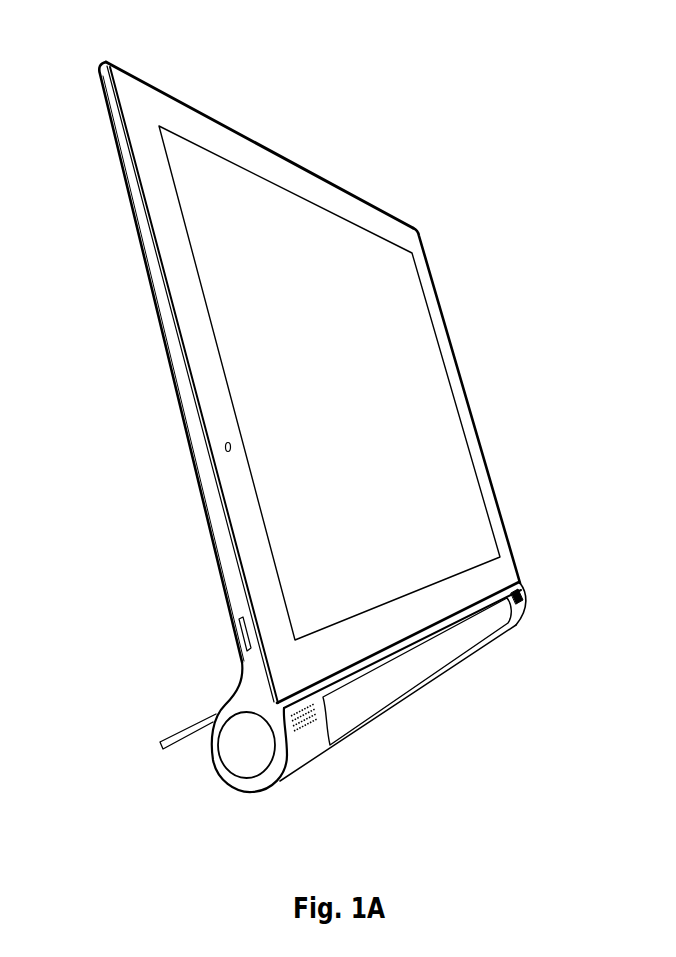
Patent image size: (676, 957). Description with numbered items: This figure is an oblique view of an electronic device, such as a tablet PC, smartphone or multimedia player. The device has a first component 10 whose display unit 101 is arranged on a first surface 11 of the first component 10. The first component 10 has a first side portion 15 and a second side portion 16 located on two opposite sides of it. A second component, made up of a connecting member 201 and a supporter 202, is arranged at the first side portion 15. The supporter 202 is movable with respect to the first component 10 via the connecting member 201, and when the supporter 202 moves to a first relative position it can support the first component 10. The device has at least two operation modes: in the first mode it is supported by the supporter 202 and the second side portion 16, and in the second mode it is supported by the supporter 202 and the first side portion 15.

The first component 10 is at (433, 300).
The first surface 11 is at (138, 95).
The second side portion 16 is at (283, 172).
The display unit 101 is at (435, 423).
The first side portion 15 is at (438, 637).
The connecting member 201 is at (397, 687).
The supporter 202 is at (177, 735).